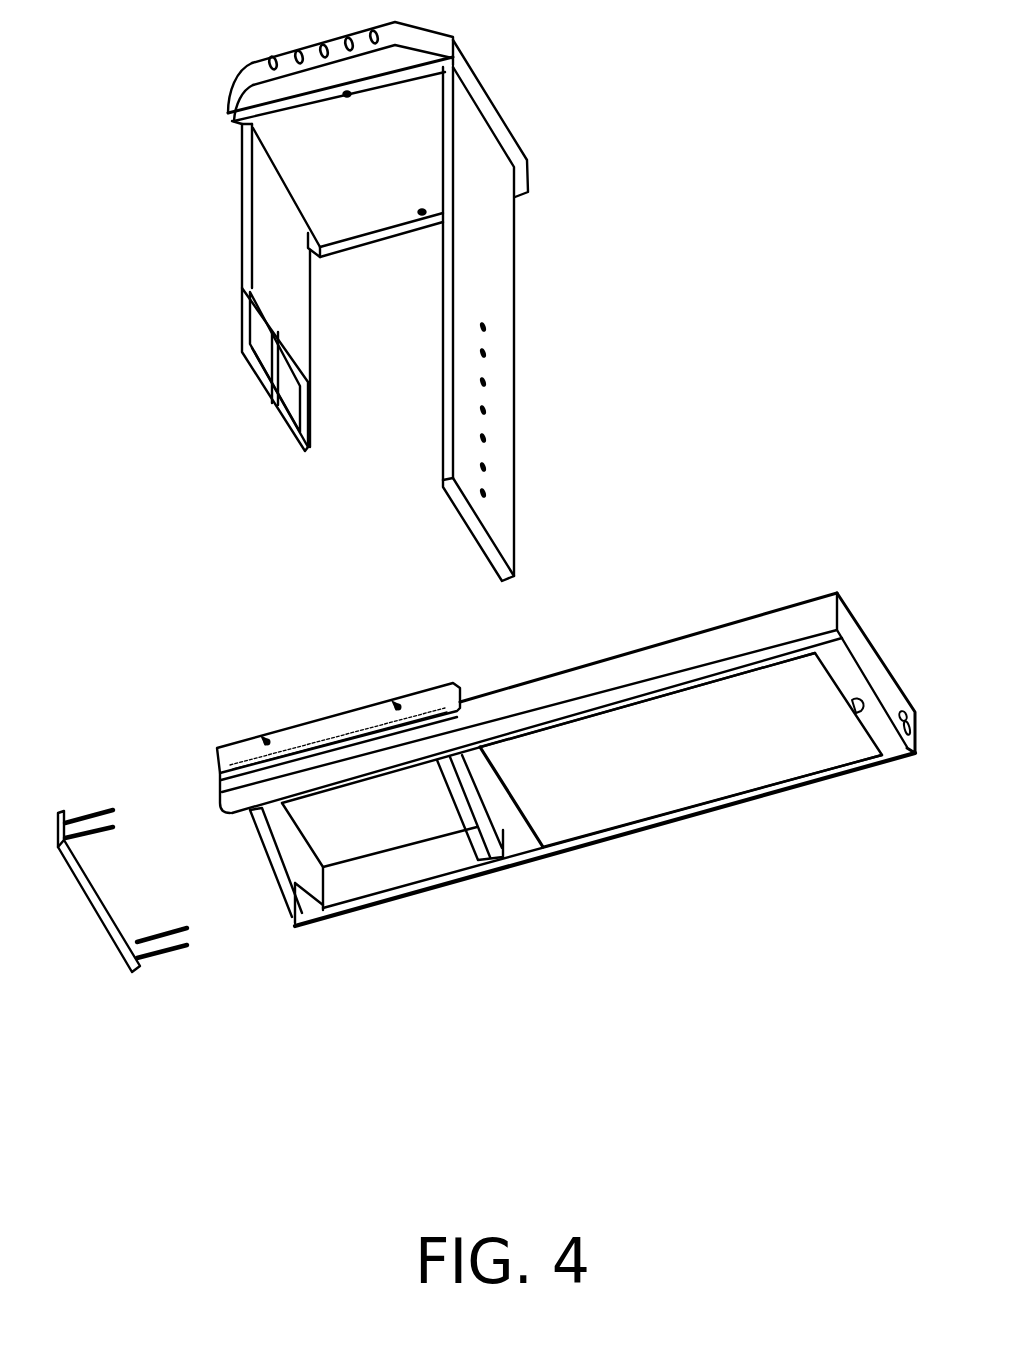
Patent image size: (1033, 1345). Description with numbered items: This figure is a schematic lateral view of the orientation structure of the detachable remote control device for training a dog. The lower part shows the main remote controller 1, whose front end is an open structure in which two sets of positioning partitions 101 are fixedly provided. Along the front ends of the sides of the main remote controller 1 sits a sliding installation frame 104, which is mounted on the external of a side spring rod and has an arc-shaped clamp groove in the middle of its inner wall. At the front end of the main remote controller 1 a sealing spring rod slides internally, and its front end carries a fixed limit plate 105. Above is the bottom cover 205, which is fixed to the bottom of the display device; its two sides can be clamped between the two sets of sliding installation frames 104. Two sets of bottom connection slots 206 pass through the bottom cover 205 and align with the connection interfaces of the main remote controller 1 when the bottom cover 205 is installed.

The main remote controller 1 is at (540, 858).
The positioning partitions 101 is at (308, 883).
The sliding installation frame 104 is at (355, 720).
The limit plate 105 is at (150, 960).
The bottom cover 205 is at (413, 82).
The bottom connection slots 206 is at (443, 217).